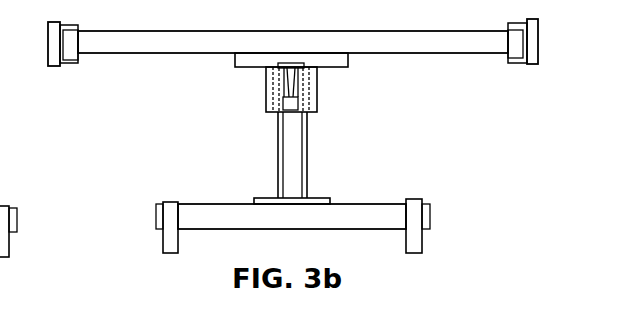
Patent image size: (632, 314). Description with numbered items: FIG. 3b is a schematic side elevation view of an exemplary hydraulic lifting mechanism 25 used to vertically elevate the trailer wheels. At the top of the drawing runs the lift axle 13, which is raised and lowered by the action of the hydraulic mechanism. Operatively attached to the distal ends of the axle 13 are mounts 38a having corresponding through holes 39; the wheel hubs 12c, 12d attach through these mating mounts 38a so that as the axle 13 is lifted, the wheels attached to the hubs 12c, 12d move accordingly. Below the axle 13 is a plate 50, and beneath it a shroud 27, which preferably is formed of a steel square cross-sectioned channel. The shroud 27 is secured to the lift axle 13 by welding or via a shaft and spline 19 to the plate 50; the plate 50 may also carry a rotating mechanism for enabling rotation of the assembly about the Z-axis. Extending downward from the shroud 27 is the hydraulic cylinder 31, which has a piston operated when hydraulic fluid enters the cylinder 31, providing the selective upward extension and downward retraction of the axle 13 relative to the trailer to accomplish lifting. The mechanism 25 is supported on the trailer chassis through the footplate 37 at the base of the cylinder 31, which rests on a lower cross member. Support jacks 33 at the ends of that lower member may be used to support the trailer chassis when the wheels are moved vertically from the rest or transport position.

The axle 13 is at (383, 31).
The wheel hub 12c is at (57, 67).
The wheel hub 12d is at (531, 65).
The through hole 39 is at (80, 58).
The mount 38a is at (67, 65).
The plate 50 is at (347, 58).
The shroud 27 is at (320, 88).
The shaft and spline 19 is at (283, 69).
The hydraulic cylinder 31 is at (267, 110).
The hydraulic lifting mechanism 25 is at (206, 151).
The footplate 37 is at (318, 198).
The support jack 33 is at (172, 203).